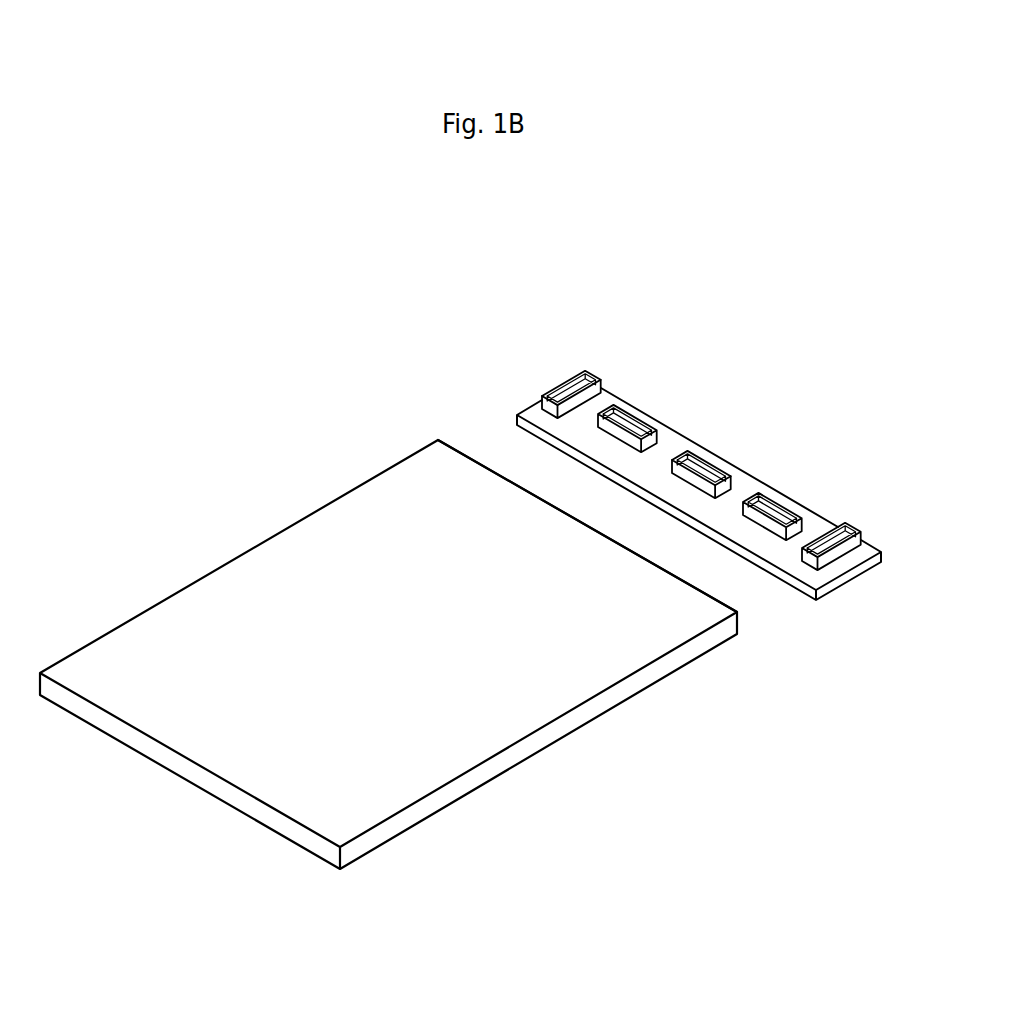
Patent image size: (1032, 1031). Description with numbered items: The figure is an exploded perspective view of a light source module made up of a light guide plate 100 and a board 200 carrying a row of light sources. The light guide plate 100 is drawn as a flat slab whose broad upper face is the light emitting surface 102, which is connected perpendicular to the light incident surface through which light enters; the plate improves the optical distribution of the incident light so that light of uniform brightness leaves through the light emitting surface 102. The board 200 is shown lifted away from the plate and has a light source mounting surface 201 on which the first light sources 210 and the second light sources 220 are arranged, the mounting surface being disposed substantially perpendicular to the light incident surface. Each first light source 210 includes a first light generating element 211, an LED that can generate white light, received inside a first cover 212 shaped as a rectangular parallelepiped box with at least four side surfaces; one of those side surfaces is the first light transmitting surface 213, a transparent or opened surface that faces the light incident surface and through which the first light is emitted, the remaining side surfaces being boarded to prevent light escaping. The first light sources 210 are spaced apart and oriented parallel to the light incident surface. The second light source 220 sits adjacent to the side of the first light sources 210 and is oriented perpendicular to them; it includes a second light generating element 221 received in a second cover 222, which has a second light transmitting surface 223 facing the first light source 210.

The light guide plate 100 is at (388, 654).
The light emitting surface 102 is at (350, 502).
The board 200 is at (706, 482).
The light source mounting surface 201 is at (780, 568).
The first light source 210 is at (699, 469).
The first light generating element 211 is at (702, 490).
The first cover 212 is at (718, 465).
The first light transmitting surface 213 is at (683, 477).
The second light source 220 is at (585, 407).
The second light generating element 221 is at (577, 428).
The second cover 222 is at (582, 372).
The second light transmitting surface 223 is at (599, 388).